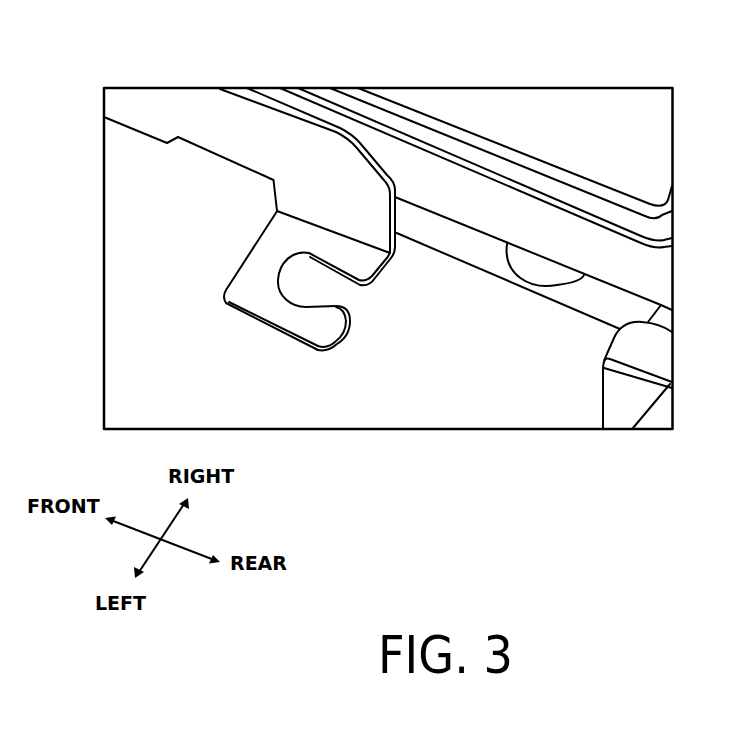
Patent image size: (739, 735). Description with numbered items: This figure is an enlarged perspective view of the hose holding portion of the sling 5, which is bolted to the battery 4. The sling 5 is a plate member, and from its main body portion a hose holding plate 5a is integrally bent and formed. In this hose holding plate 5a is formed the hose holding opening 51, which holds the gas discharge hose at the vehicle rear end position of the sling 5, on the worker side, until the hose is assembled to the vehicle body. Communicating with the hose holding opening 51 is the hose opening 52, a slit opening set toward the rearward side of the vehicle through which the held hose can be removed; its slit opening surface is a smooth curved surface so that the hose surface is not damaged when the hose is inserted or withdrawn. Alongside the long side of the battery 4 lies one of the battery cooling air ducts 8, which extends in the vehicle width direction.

The battery 4 is at (513, 127).
The sling 5 is at (181, 112).
The hose holding plate 5a is at (252, 282).
The hose holding opening 51 is at (291, 277).
The hose opening 52 is at (347, 299).
The battery cooling air duct 8 is at (650, 358).